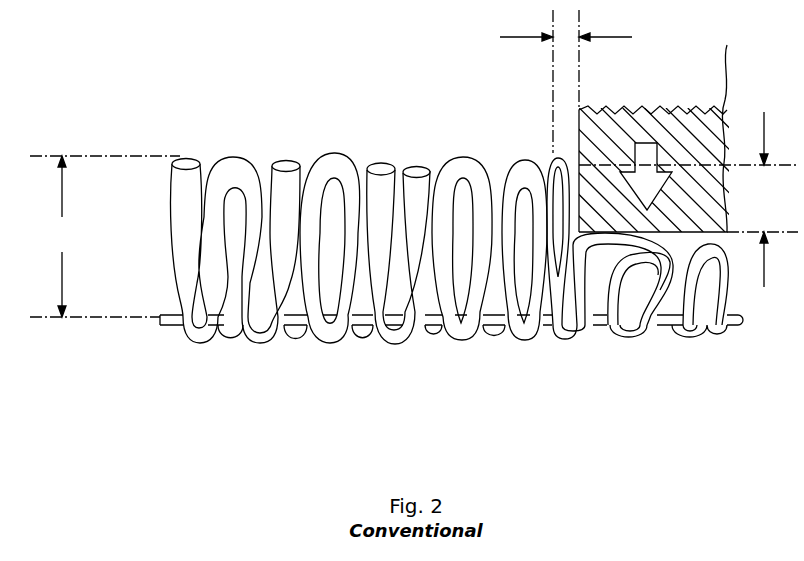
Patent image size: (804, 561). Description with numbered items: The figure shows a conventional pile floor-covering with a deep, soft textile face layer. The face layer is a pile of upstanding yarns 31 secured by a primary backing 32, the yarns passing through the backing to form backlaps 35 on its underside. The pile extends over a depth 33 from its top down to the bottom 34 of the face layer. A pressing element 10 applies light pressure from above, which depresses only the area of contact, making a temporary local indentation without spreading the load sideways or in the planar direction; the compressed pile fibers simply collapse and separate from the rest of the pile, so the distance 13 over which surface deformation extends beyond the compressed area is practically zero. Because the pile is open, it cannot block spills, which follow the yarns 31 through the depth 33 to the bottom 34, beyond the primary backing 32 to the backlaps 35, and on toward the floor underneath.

The pressing member (hatched block) 10 is at (637, 166).
The distance 13 is at (555, 81).
The upstanding yarns 31 is at (229, 177).
The primary backing 32 is at (170, 328).
The depth 33 is at (105, 236).
The bottom 34 is at (202, 300).
The backlaps 35 is at (297, 338).